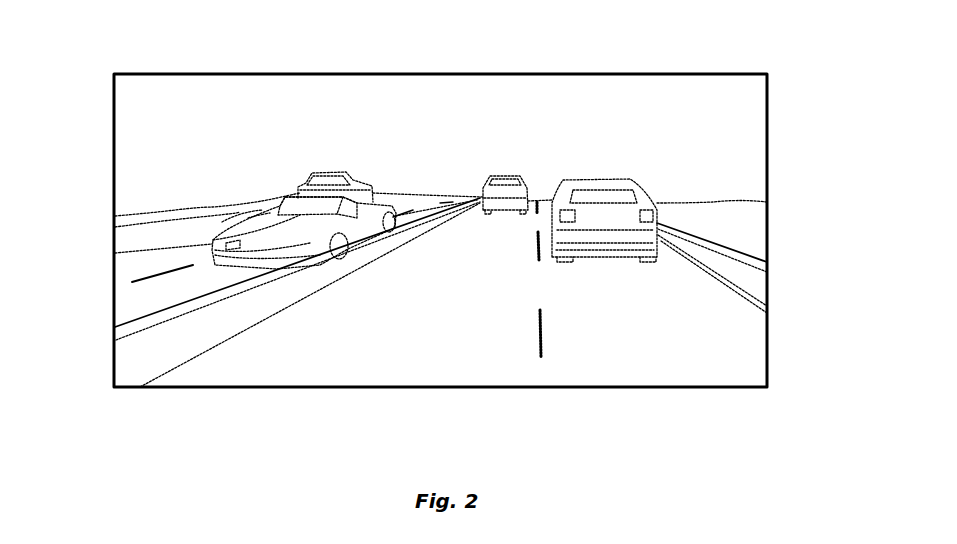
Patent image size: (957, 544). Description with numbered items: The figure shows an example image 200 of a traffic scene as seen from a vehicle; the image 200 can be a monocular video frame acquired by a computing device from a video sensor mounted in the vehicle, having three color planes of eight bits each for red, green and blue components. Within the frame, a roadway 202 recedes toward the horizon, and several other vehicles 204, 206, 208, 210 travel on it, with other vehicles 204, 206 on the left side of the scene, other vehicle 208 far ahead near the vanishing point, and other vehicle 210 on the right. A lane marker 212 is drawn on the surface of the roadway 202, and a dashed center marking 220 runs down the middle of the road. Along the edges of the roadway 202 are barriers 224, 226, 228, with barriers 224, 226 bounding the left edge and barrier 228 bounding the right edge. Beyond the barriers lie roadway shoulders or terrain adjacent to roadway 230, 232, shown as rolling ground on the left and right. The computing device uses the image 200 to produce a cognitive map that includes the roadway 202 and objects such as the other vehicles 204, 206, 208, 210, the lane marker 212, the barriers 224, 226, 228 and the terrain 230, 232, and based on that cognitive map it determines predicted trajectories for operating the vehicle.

The image 200 is at (468, 35).
The roadway 202 is at (402, 357).
The other vehicle 204 is at (263, 207).
The other vehicle 206 is at (307, 175).
The other vehicle 208 is at (528, 185).
The other vehicle 210 is at (635, 188).
The lane marker 212 is at (323, 360).
The lane marking 220 is at (540, 332).
The barrier 224 is at (167, 368).
The barrier 226 is at (114, 222).
The barrier 228 is at (722, 248).
The roadway shoulder or terrain adjacent to roadway 230 is at (213, 208).
The roadway shoulder or terrain adjacent to roadway 232 is at (713, 202).